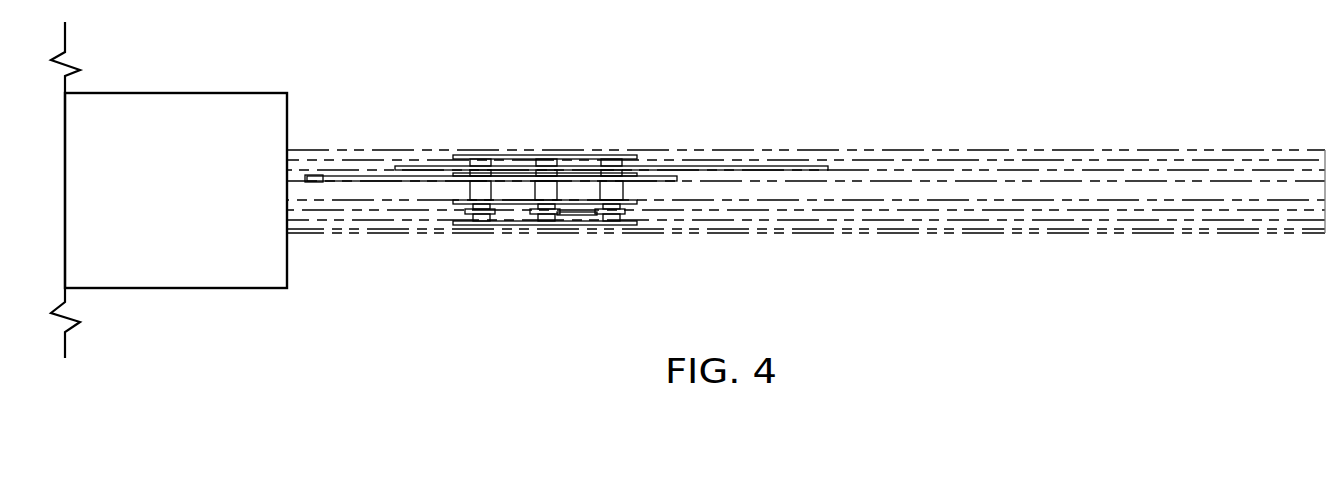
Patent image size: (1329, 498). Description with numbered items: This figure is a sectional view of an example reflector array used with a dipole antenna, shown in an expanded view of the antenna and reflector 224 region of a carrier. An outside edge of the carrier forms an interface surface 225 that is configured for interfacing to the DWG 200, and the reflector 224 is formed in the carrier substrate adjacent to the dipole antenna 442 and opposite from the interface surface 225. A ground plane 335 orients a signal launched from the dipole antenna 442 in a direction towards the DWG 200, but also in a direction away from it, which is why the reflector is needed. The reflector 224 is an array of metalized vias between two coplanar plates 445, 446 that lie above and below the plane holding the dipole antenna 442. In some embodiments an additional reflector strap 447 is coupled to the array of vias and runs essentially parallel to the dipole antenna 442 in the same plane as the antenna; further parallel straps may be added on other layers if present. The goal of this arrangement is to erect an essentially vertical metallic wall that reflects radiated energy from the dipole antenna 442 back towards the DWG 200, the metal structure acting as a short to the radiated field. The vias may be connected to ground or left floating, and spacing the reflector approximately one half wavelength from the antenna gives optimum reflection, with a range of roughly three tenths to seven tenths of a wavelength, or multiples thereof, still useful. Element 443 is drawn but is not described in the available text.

The DWG 200 is at (188, 93).
The interface surface 225 is at (283, 150).
The reflector 224 is at (577, 219).
The ground plane 335 is at (413, 166).
The bar 443 is at (342, 173).
The dipole antenna 442 is at (313, 184).
The coplanar plate 445 is at (515, 155).
The coplanar plate 446 is at (585, 226).
The reflector strap 447 is at (629, 239).